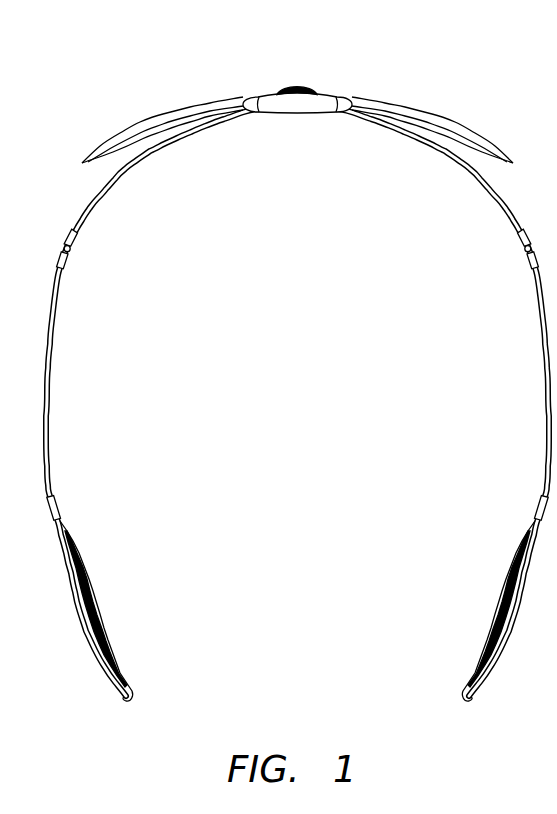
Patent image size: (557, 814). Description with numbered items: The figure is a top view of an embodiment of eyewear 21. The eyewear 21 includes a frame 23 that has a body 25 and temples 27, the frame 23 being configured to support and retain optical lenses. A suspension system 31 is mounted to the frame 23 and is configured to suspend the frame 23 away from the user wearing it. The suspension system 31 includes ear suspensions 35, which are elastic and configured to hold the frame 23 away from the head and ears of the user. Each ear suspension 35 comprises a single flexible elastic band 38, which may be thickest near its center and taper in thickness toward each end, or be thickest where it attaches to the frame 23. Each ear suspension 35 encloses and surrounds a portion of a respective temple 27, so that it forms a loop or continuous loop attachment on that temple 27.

The eyewear 21 is at (295, 351).
The frame 23 is at (57, 273).
The body 25 is at (506, 206).
The temples 27 is at (47, 396).
The suspension system 31 is at (294, 152).
The ear suspensions 35 is at (164, 624).
The flexible elastic band 38 is at (92, 598).